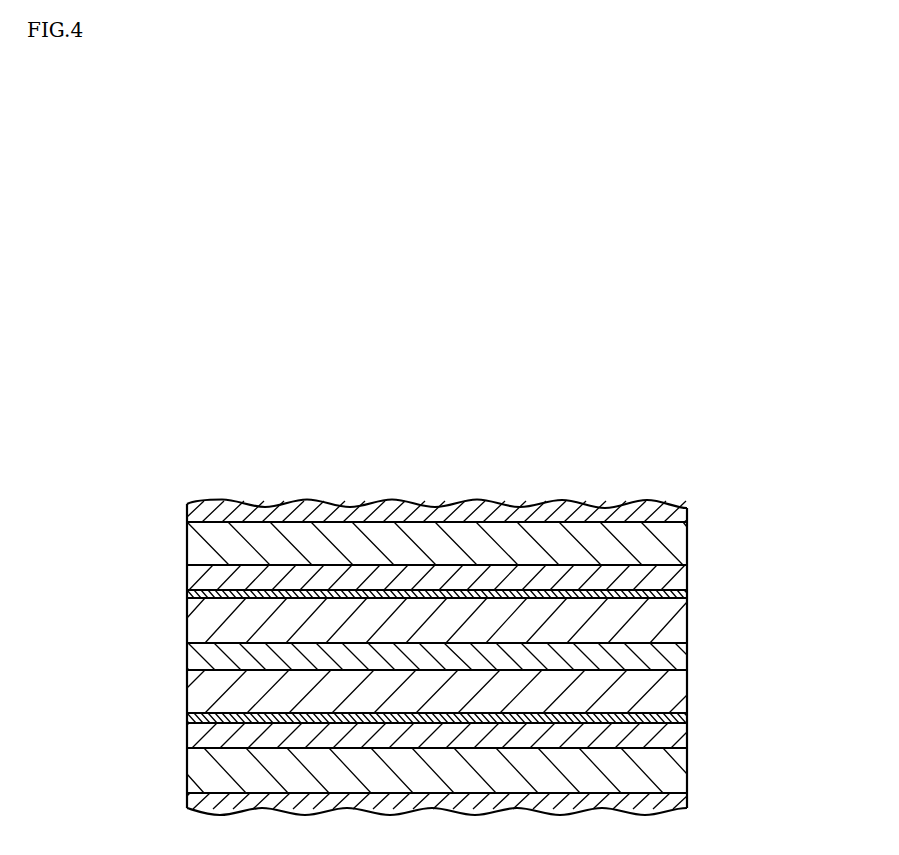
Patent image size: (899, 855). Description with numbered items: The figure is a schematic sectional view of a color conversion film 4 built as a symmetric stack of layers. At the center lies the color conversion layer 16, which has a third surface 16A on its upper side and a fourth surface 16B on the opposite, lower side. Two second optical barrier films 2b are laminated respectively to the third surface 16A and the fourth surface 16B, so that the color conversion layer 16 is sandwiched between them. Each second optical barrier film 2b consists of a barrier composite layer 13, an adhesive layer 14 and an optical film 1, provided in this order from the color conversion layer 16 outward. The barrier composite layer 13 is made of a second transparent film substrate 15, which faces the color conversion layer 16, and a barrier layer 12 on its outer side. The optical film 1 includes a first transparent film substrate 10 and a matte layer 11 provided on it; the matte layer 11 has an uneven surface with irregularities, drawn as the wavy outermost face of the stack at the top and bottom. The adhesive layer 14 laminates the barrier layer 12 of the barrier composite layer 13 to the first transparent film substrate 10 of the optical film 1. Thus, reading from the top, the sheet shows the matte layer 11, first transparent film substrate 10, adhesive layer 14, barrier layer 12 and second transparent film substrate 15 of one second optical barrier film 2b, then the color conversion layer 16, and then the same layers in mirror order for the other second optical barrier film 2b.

The color conversion film 4 is at (732, 393).
The optical film 1 is at (762, 503).
The first transparent film substrate 10 is at (688, 544).
The matte layer 11 is at (688, 513).
The barrier layer 12 is at (688, 591).
The barrier composite layer 13 is at (762, 583).
The adhesive layer 14 is at (688, 571).
The second transparent film substrate 15 is at (688, 624).
The color conversion layer 16 is at (688, 657).
The third surface 16A is at (228, 639).
The fourth surface 16B is at (228, 673).
The second optical barrier film 2b is at (812, 502).